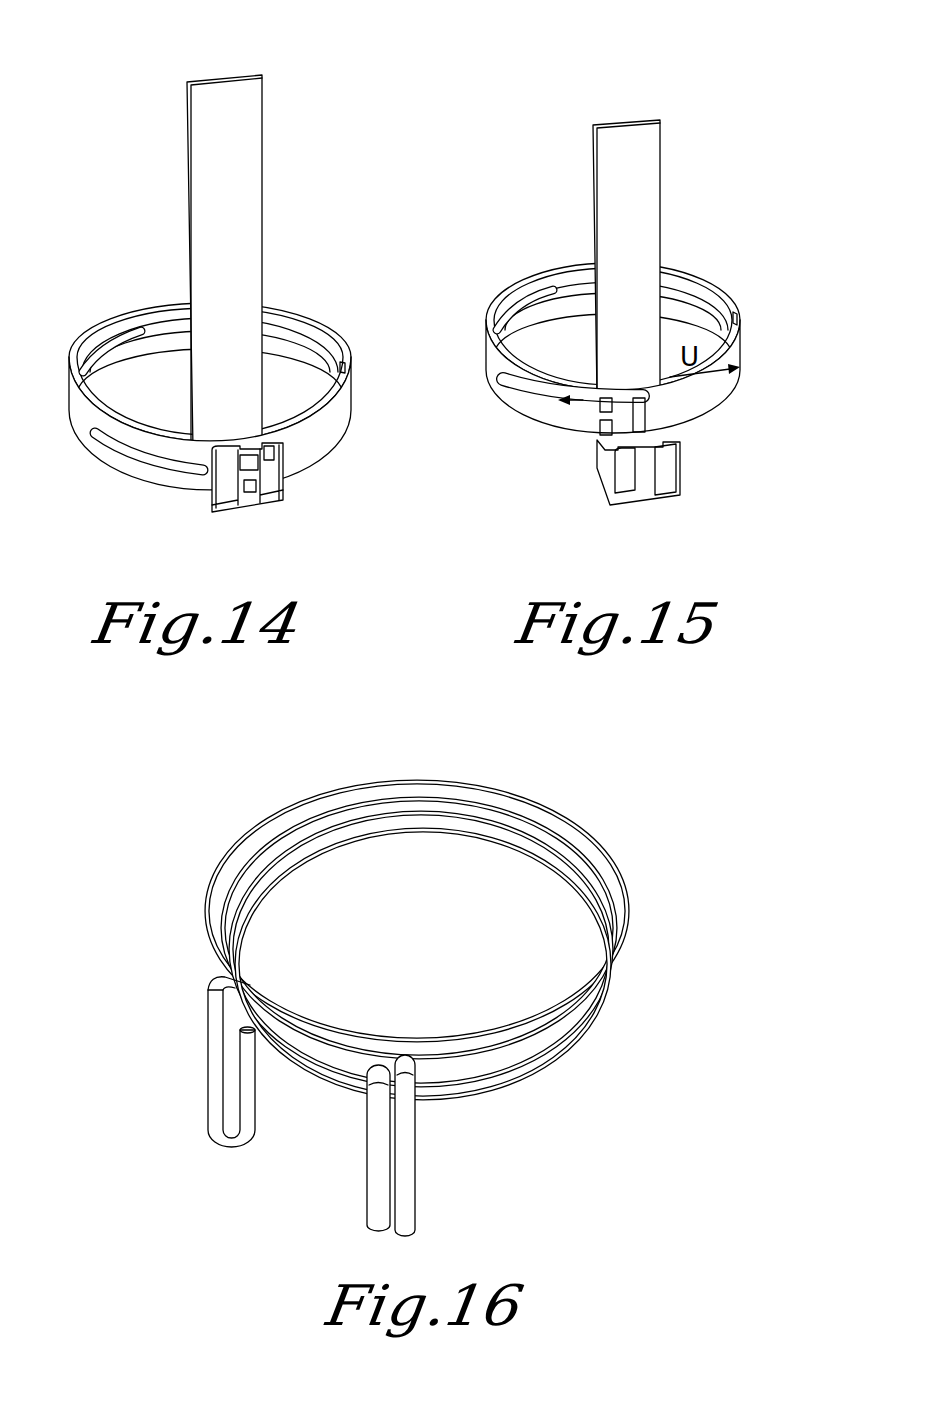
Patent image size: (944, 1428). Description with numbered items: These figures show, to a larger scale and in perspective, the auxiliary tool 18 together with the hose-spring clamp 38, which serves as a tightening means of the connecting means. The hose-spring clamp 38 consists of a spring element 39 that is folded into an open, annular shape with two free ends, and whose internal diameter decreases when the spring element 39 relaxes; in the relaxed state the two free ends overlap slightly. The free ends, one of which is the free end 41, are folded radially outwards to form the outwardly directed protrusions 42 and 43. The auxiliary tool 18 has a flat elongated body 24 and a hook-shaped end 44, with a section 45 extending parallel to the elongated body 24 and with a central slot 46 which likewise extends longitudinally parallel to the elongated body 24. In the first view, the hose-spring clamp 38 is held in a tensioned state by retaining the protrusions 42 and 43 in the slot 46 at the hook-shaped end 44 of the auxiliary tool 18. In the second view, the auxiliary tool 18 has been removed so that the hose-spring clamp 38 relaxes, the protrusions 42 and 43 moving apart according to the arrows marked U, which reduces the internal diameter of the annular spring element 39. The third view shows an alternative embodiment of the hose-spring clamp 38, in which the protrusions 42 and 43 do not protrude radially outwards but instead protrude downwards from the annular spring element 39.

In FIG. 14, the auxiliary tool 18 is at (296, 128).
In FIG. 15, the auxiliary tool 18 is at (700, 82).
In FIG. 14, the elongated body 24 is at (224, 138).
In FIG. 15, the elongated body 24 is at (626, 133).
In FIG. 14, the hose-spring clamp 38 is at (246, 289).
In FIG. 15, the hose-spring clamp 38 is at (658, 281).
In FIG. 16, the hose-spring clamp 38 is at (492, 1009).
In FIG. 14, the spring element 39 is at (175, 318).
In FIG. 15, the spring element 39 is at (582, 278).
In FIG. 16, the spring element 39 is at (566, 822).
In FIG. 14, the free end 41 is at (203, 448).
In FIG. 15, the free end 41 is at (597, 385).
In FIG. 14, the protrusion 42 is at (232, 452).
In FIG. 15, the protrusion 42 is at (582, 440).
In FIG. 16, the protrusion 42 is at (218, 1105).
In FIG. 14, the protrusion 43 is at (268, 452).
In FIG. 15, the protrusion 43 is at (703, 417).
In FIG. 16, the protrusion 43 is at (412, 1185).
In FIG. 14, the hook-shaped end 44 is at (264, 490).
In FIG. 15, the hook-shaped end 44 is at (675, 488).
In FIG. 14, the section 45 is at (212, 506).
In FIG. 15, the section 45 is at (602, 488).
In FIG. 14, the central slot 46 is at (250, 497).
In FIG. 15, the central slot 46 is at (663, 503).